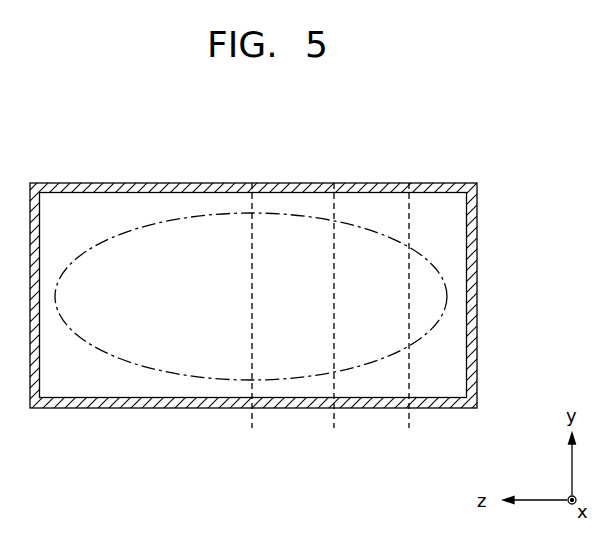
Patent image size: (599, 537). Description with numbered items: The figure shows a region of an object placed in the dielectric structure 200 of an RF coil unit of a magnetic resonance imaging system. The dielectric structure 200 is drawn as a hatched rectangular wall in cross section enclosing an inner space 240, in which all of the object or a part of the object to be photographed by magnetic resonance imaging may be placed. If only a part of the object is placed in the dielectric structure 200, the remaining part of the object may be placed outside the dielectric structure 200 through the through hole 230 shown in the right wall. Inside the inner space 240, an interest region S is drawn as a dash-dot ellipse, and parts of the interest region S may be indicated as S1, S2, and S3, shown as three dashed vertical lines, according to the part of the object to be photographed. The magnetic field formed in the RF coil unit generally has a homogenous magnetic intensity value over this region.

The dielectric structure 200 is at (232, 195).
The through hole 230 is at (471, 292).
The inner space 240 is at (91, 373).
The interest region S is at (150, 224).
The first part of interest region S1 is at (252, 325).
The second part of interest region S2 is at (333, 325).
The third part of interest region S3 is at (409, 325).